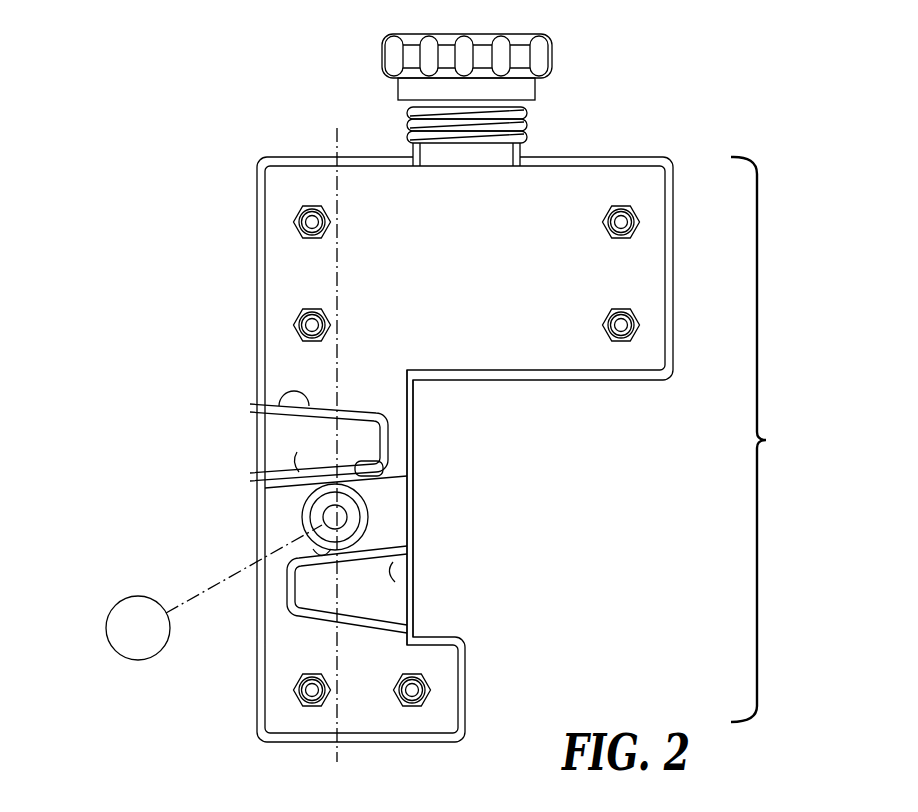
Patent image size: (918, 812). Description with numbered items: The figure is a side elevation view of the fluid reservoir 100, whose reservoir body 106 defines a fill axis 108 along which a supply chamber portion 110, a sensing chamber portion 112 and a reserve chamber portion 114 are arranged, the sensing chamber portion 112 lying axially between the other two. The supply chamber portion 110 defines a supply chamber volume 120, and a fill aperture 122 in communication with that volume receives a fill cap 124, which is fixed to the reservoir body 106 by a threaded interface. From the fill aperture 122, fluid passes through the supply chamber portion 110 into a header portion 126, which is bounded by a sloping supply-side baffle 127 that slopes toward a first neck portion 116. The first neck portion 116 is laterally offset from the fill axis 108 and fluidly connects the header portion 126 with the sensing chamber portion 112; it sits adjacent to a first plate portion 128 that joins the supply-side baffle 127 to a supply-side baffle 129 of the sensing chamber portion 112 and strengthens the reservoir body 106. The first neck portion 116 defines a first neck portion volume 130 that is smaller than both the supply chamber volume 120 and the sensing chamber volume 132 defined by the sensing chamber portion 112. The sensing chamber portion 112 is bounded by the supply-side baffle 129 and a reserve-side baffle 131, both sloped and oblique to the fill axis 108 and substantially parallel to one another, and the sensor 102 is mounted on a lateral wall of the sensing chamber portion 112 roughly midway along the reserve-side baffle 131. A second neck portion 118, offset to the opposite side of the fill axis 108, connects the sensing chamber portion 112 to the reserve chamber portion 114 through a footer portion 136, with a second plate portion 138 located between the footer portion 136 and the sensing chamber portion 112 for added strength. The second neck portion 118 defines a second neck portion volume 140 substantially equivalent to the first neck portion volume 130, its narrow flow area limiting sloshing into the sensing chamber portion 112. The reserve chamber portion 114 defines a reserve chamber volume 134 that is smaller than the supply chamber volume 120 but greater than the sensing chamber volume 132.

The fluid reservoir 100 is at (240, 736).
The sensor 102 is at (106, 628).
The reservoir body 106 is at (758, 440).
The fill axis 108 is at (336, 145).
The supply chamber portion 110 is at (425, 285).
The sensing chamber portion 112 is at (385, 523).
The reserve chamber portion 114 is at (445, 688).
The first neck portion 116 is at (396, 433).
The second neck portion 118 is at (275, 597).
The supply chamber volume 120 is at (648, 400).
The fill aperture 122 is at (500, 152).
The fill cap 124 is at (500, 56).
The header portion 126 is at (372, 397).
The supply-side baffle of the header portion 127 is at (300, 405).
The first plate portion 128 is at (296, 462).
The supply-side baffle of the sensing chamber portion 129 is at (372, 466).
The first neck portion volume 130 is at (516, 457).
The reserve-side baffle of the sensing chamber portion 131 is at (337, 545).
The sensing chamber volume 132 is at (498, 515).
The reserve chamber volume 134 is at (493, 708).
The footer portion 136 is at (297, 630).
The second plate portion 138 is at (397, 570).
The second neck portion volume 140 is at (193, 552).